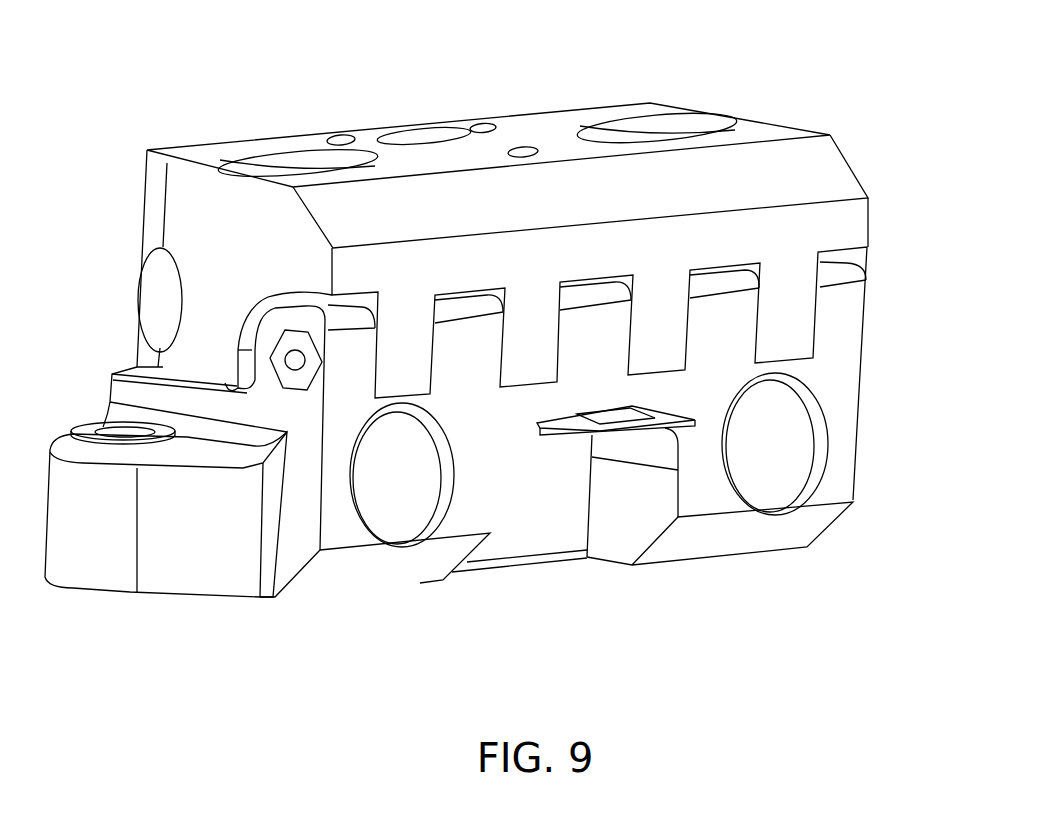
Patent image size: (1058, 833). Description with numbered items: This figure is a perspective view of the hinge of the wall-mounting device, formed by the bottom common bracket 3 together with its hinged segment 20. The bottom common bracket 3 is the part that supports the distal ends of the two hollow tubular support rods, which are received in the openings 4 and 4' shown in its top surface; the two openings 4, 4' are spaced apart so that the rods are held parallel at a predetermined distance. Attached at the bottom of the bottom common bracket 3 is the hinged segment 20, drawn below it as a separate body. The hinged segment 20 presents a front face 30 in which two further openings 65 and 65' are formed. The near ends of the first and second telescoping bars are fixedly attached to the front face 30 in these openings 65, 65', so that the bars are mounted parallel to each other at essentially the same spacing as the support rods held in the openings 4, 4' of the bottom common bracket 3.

The bottom common bracket 3 is at (848, 131).
The opening 4 is at (297, 120).
The opening 4' is at (657, 85).
The hinged segment 20 is at (878, 379).
The front face 30 is at (490, 423).
The opening 65 is at (402, 546).
The opening 65' is at (775, 513).